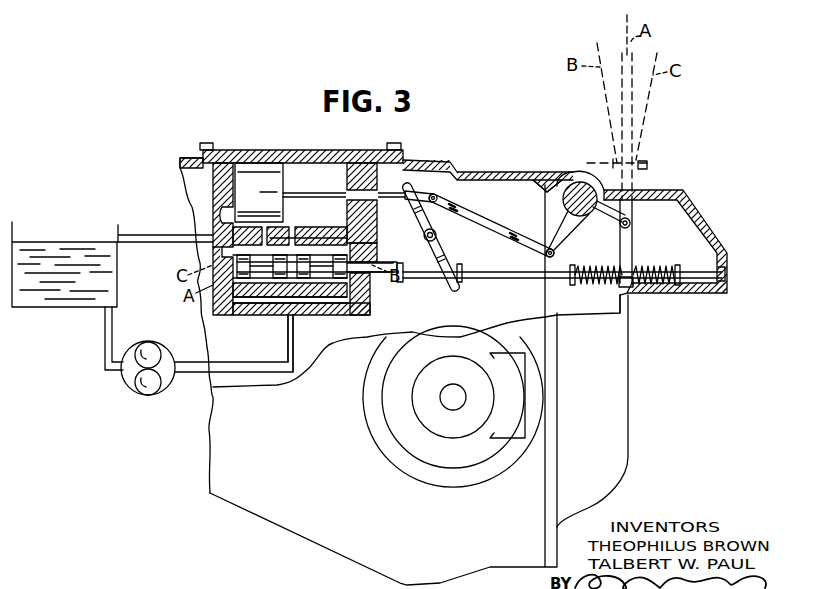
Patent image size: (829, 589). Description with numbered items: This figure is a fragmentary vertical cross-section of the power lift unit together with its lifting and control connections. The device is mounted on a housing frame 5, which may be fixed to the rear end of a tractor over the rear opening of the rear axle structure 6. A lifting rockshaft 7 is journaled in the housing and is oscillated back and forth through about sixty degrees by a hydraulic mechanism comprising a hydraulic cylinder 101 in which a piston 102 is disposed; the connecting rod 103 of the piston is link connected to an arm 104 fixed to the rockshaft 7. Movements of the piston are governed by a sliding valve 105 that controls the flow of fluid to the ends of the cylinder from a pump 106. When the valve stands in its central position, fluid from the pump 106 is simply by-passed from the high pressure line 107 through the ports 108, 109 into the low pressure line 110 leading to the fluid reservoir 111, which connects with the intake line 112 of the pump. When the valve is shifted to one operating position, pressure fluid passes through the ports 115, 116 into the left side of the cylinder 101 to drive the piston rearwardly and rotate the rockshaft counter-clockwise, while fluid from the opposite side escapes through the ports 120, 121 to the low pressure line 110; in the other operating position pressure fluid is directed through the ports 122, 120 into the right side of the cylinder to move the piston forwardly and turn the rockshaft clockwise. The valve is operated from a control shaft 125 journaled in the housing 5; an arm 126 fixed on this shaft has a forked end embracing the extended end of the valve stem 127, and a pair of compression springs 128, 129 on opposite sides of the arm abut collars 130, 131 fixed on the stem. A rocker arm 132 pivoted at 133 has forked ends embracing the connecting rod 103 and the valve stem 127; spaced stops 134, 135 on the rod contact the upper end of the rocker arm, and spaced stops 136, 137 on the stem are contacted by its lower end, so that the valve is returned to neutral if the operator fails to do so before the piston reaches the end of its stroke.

The housing frame 5 is at (605, 445).
The rear axle structure 6 is at (408, 437).
The lifting rockshaft 7 is at (576, 185).
The hydraulic cylinder 101 is at (297, 172).
The piston 102 is at (251, 180).
The connecting rod 103 is at (309, 198).
The arm 104 is at (563, 223).
The sliding valve 105 is at (279, 290).
The pump 106 is at (130, 393).
The high pressure line 107 is at (291, 328).
The port 108 is at (305, 290).
The port 109 is at (291, 238).
The low pressure line 110 is at (145, 237).
The fluid reservoir 111 is at (13, 230).
The intake line 112 is at (107, 331).
The port 115 is at (238, 300).
The port 116 is at (213, 247).
The port 120 is at (367, 237).
The port 121 is at (365, 254).
The port 122 is at (366, 299).
The control shaft 125 is at (631, 224).
The arm 126 is at (627, 252).
The valve stem 127 is at (513, 275).
The compression spring 128 is at (595, 283).
The compression spring 129 is at (647, 286).
The collar 130 is at (573, 266).
The collar 131 is at (678, 266).
The rocker arm 132 is at (447, 254).
The pivot 133 is at (437, 236).
The stop 134 is at (378, 198).
The stop 135 is at (437, 198).
The stop 136 is at (405, 281).
The stop 137 is at (461, 281).